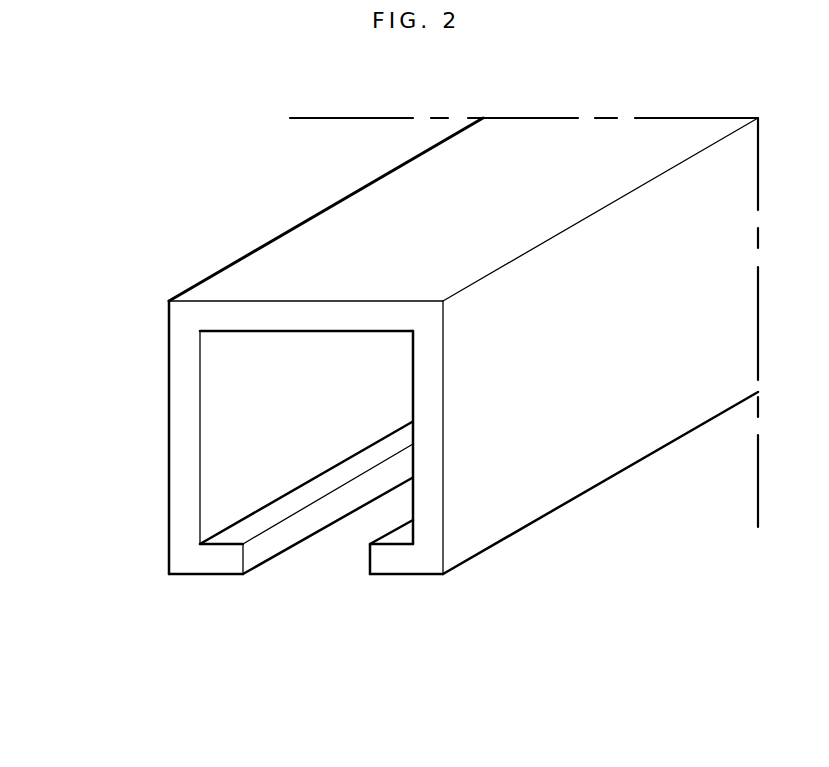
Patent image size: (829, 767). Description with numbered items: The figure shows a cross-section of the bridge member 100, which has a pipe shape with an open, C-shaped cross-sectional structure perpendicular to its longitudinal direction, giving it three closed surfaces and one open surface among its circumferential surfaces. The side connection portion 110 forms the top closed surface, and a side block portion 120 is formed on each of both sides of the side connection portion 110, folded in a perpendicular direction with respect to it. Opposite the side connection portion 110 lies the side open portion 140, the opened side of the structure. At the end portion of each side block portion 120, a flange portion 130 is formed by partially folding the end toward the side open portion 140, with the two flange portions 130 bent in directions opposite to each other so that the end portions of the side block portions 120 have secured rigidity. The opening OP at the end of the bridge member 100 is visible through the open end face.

The bridge member 100 is at (300, 222).
The side connection portion 110 is at (255, 275).
The side block portion 120 is at (190, 433).
The flange portion 130 is at (213, 560).
The side open portion 140 is at (297, 558).
The opening OP is at (323, 424).